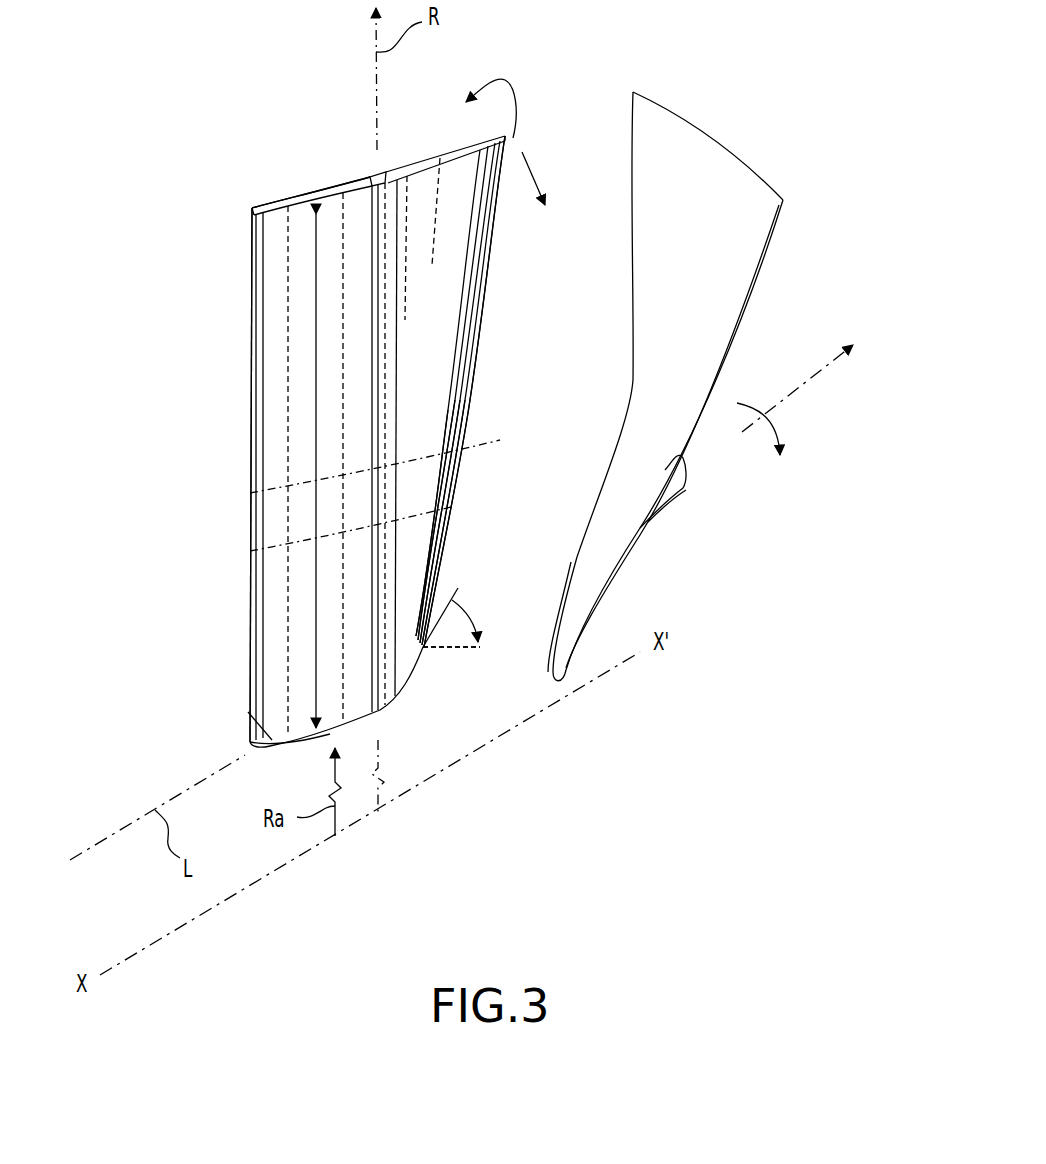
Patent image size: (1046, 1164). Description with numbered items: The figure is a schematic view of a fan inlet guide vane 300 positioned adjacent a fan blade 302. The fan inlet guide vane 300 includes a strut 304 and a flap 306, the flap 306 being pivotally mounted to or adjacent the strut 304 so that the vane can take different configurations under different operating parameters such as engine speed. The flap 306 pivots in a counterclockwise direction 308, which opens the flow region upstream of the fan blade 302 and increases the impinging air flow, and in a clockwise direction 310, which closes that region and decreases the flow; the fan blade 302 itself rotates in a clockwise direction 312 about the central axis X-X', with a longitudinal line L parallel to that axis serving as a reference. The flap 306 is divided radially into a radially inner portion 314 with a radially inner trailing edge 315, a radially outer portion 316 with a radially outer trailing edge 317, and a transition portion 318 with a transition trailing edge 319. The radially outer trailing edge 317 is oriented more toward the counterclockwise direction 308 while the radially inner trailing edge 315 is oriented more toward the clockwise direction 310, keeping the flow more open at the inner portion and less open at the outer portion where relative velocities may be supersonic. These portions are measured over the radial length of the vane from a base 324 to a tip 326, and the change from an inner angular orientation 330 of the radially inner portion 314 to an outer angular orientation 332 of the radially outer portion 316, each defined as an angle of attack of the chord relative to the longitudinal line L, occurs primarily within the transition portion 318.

The fan inlet guide vane 300 is at (243, 106).
The fan blade 302 is at (745, 143).
The strut 304 is at (270, 425).
The flap 306 is at (420, 300).
The counterclockwise direction 308 is at (505, 80).
The clockwise direction 310 is at (528, 168).
The clockwise direction 312 is at (782, 432).
The radially inner portion 314 is at (413, 573).
The radially inner trailing edge 315 is at (438, 525).
The radially outer portion 316 is at (437, 377).
The radially outer trailing edge 317 is at (490, 297).
The transition portion 318 is at (445, 465).
The transition trailing edge 319 is at (452, 482).
The base 324 is at (250, 714).
The tip 326 is at (272, 200).
The inner angular orientation 330 is at (465, 615).
The outer angular orientation 332 is at (461, 632).